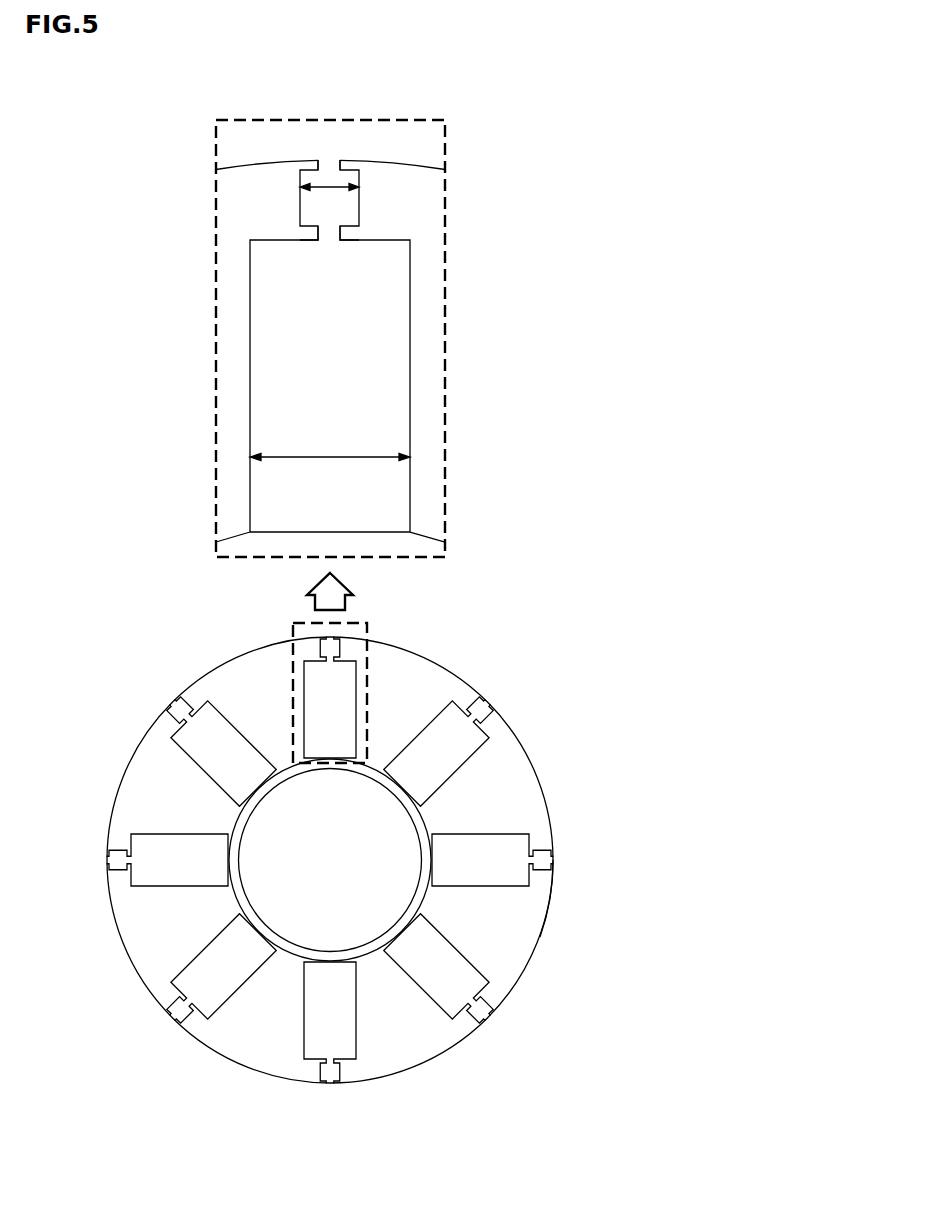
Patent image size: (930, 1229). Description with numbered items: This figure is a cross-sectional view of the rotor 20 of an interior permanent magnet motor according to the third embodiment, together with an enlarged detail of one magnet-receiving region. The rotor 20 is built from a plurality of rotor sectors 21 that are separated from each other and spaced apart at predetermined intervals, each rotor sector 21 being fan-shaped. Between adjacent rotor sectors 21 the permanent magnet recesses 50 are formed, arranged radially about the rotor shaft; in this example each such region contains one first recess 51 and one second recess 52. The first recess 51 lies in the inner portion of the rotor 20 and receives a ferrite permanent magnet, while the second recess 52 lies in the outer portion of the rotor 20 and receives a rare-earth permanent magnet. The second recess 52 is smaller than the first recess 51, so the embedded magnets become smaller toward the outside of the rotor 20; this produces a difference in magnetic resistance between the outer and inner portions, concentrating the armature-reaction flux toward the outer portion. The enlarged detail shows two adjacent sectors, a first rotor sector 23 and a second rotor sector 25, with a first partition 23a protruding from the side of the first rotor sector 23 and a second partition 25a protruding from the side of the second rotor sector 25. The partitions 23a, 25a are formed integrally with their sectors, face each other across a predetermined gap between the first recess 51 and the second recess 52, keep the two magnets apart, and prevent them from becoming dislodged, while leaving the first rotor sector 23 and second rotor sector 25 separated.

The rotor 20 is at (531, 744).
The rotor sectors 21 is at (540, 818).
The first rotor sector 23 is at (264, 172).
The second rotor sector 25 is at (404, 173).
The first partition 23a is at (312, 246).
The second partition 25a is at (348, 246).
The permanent magnet recesses 50 is at (340, 650).
The first recess 51 is at (345, 362).
The second recess 52 is at (336, 178).